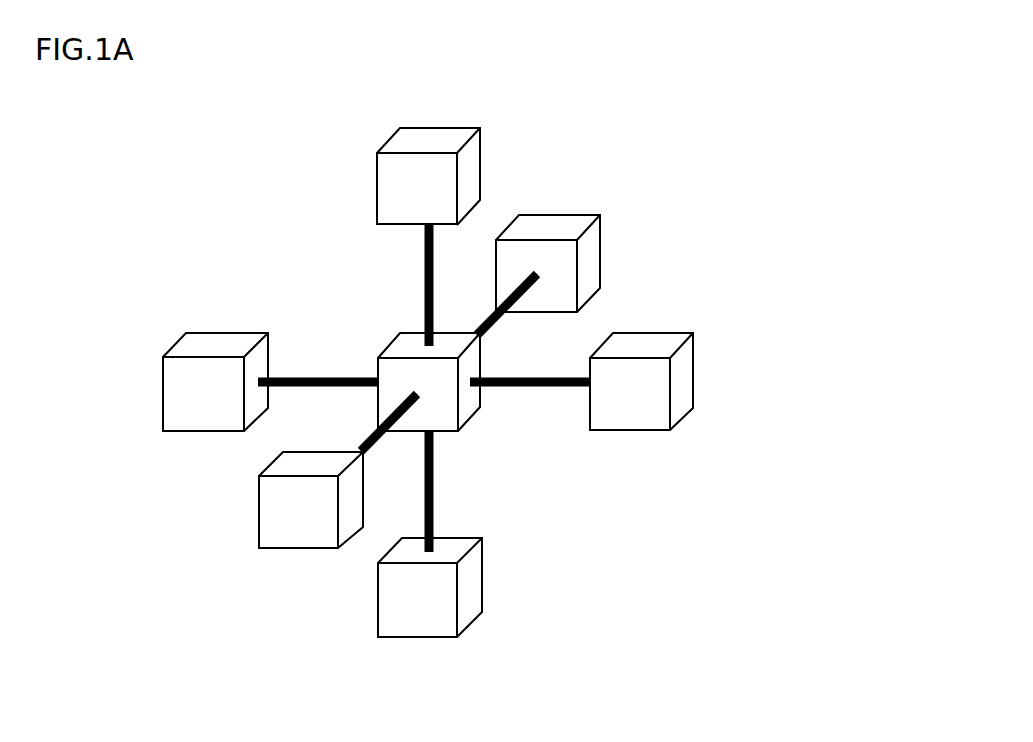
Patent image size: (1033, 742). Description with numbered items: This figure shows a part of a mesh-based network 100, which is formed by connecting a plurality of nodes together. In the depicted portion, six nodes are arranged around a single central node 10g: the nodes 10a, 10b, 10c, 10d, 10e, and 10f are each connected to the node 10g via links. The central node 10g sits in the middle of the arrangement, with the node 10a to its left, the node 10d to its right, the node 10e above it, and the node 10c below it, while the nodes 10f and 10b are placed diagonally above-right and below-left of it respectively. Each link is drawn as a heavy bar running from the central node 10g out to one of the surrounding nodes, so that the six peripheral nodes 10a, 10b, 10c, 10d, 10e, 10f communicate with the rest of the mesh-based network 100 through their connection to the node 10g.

The mesh-based network 100 is at (626, 105).
The node 10a is at (197, 343).
The node 10b is at (320, 463).
The node 10c is at (455, 548).
The node 10d is at (655, 343).
The node 10e is at (412, 136).
The node 10f is at (562, 229).
The node 10g is at (411, 342).